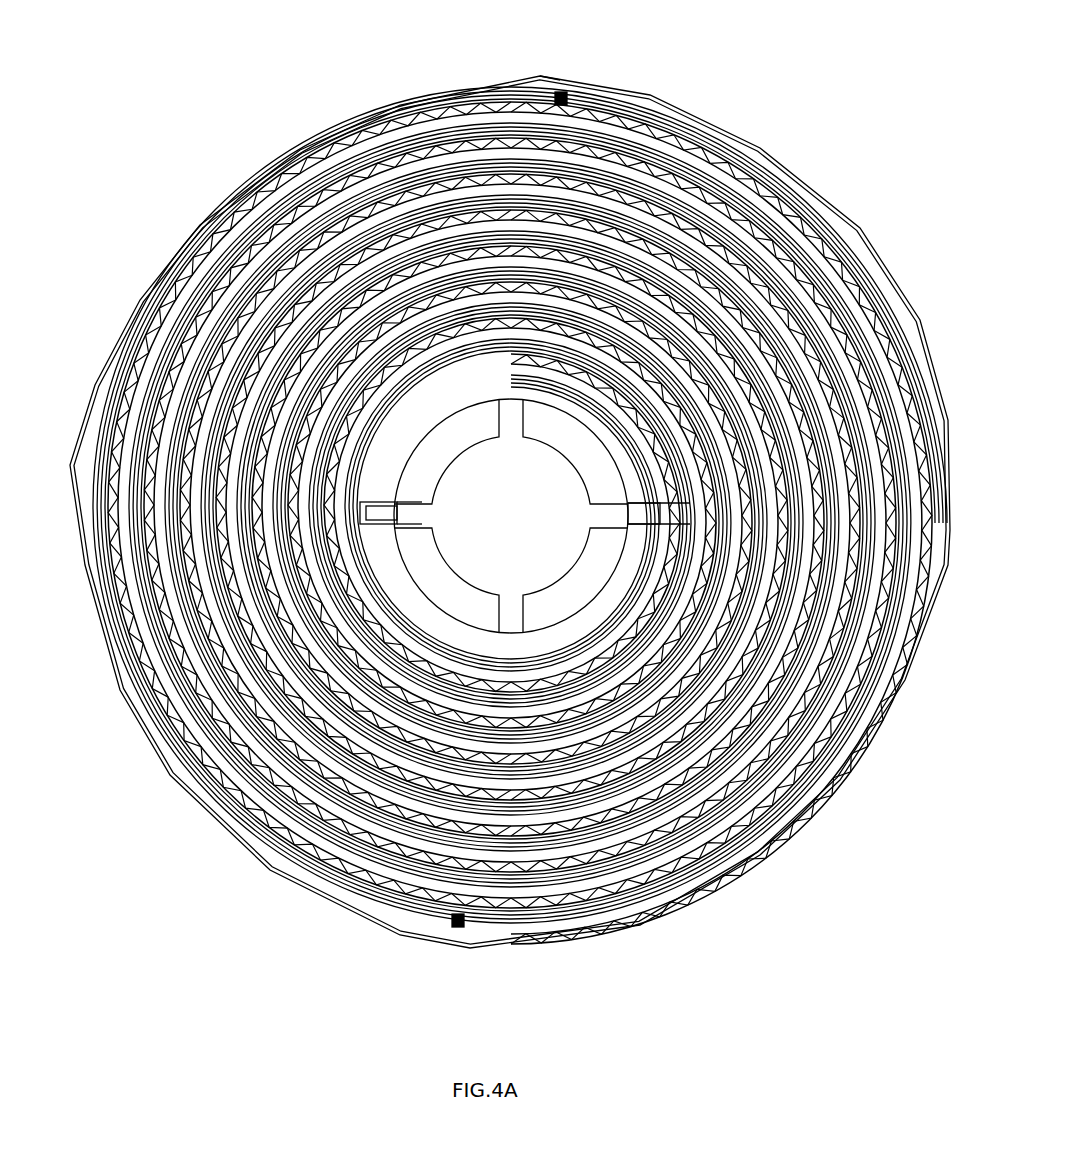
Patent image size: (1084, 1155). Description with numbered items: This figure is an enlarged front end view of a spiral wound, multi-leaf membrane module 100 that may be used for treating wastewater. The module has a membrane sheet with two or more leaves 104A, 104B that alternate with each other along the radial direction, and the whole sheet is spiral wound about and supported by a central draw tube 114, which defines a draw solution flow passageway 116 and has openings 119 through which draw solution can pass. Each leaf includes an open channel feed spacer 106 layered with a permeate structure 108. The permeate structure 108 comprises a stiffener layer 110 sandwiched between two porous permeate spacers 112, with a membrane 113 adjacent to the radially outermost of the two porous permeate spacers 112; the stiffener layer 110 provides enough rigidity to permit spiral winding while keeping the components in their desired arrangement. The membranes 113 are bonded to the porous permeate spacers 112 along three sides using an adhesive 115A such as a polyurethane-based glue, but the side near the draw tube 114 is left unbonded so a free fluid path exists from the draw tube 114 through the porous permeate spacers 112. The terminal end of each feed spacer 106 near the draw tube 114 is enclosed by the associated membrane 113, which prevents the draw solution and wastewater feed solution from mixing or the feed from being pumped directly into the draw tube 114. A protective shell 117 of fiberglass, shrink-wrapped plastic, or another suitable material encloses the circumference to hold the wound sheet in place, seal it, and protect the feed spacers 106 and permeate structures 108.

The membrane module 100 is at (850, 186).
The leaf 104A is at (402, 472).
The leaf 104B is at (612, 550).
The open channel feed spacer 106 is at (907, 363).
The permeate structure 108 is at (545, 88).
The stiffener layer 110 is at (750, 160).
The porous permeate spacer 112 is at (700, 143).
The membrane 113 is at (640, 118).
The draw tube 114 is at (602, 477).
The adhesive 115A is at (561, 92).
The draw solution flow passageway 116 is at (492, 537).
The protective shell 117 is at (598, 926).
The openings 119 is at (577, 447).